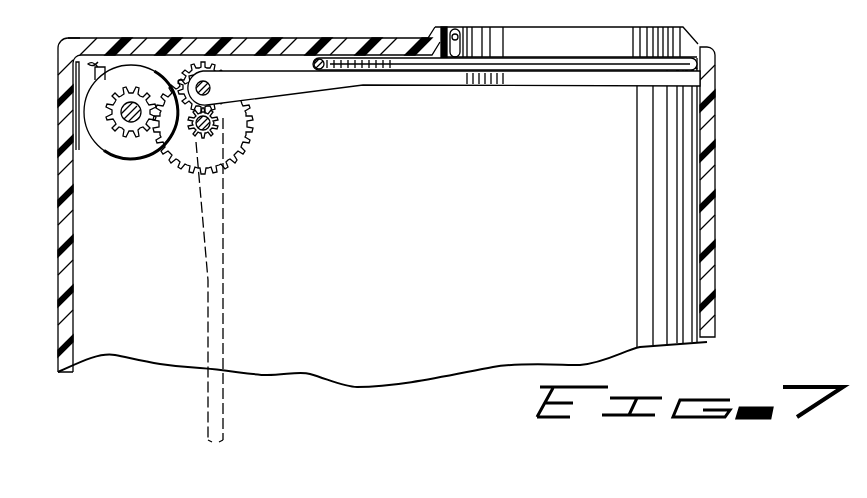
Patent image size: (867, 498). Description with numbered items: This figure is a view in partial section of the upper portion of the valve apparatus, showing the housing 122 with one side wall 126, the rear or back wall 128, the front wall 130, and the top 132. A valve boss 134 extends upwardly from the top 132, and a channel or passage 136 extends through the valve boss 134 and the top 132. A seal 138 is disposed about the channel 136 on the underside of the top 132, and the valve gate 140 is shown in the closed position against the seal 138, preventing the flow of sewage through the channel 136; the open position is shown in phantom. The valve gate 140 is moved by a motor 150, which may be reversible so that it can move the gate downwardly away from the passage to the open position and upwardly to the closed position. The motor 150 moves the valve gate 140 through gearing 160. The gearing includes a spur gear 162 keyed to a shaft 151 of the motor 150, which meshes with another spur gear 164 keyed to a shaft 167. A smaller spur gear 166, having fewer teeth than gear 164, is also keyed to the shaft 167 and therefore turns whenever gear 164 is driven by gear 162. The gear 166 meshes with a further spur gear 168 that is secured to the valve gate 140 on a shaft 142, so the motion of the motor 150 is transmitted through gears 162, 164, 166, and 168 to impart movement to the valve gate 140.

The housing 122 is at (716, 298).
The side wall 126 is at (658, 338).
The rear wall 128 is at (58, 230).
The front wall 130 is at (708, 182).
The top 132 is at (382, 50).
The valve boss 134 is at (686, 40).
The channel or passage 136 is at (452, 36).
The seal 138 is at (563, 62).
The valve gate 140 is at (437, 78).
The shaft 142 is at (213, 80).
The motor 150 is at (88, 113).
The motor shaft 151 is at (131, 137).
The gearing 160 is at (194, 188).
The spur gear 162 is at (107, 133).
The spur gear 164 is at (232, 160).
The spur gear 166 is at (218, 133).
The shaft 167 is at (211, 116).
The spur gear 168 is at (196, 63).